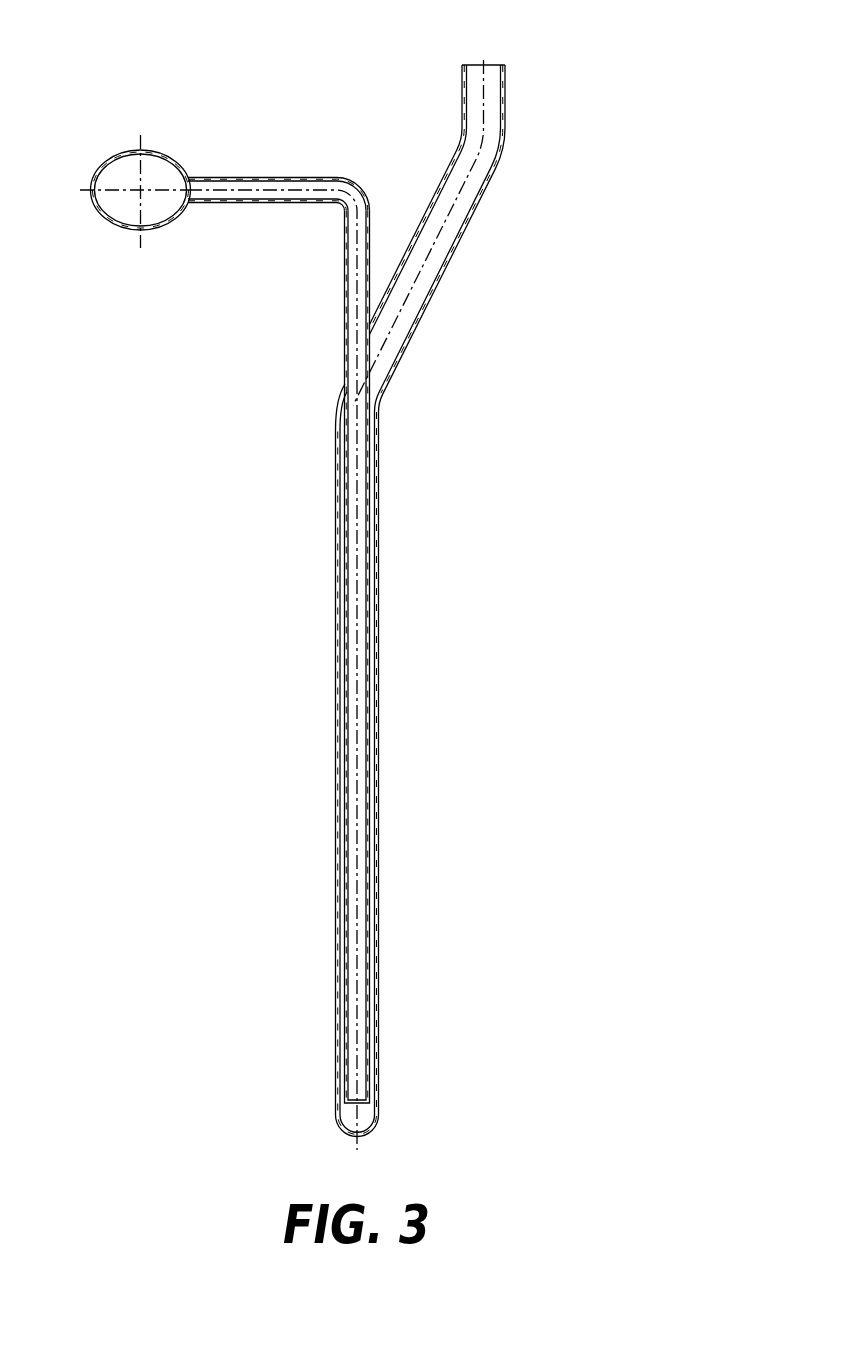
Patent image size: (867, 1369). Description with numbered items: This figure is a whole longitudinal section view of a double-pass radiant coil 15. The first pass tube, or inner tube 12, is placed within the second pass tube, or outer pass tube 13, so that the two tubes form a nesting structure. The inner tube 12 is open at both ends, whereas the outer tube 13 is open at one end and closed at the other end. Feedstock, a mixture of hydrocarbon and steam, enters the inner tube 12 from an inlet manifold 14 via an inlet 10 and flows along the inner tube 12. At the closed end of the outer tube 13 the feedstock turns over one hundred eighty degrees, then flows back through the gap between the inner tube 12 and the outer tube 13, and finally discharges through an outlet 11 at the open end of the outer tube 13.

The inlet 10 is at (323, 177).
The outlet 11 is at (485, 70).
The first pass tube (inner tube) 12 is at (350, 938).
The second pass tube (outer pass tube) 13 is at (340, 990).
The inlet manifold 14 is at (123, 172).
The radiant coil 15 is at (160, 455).